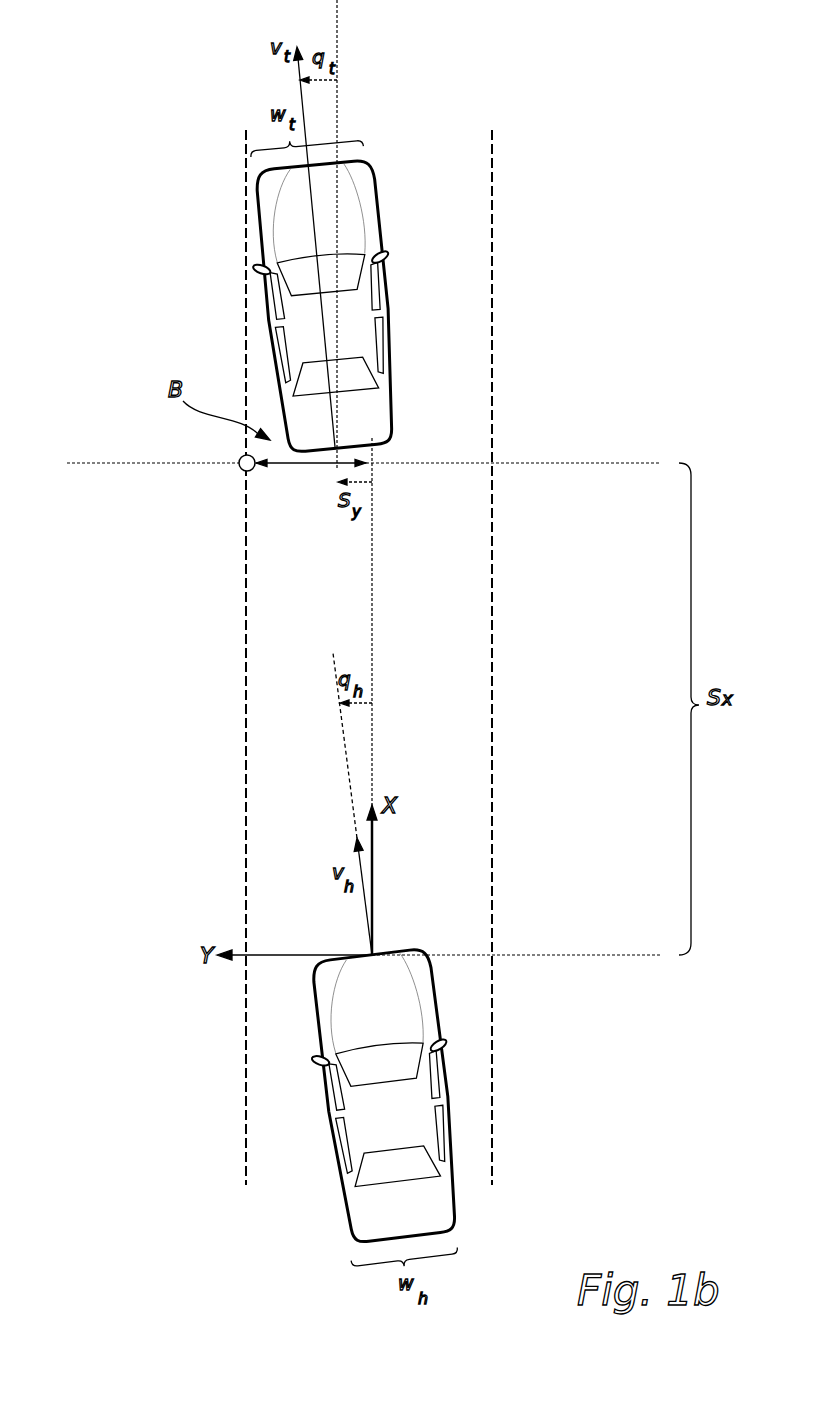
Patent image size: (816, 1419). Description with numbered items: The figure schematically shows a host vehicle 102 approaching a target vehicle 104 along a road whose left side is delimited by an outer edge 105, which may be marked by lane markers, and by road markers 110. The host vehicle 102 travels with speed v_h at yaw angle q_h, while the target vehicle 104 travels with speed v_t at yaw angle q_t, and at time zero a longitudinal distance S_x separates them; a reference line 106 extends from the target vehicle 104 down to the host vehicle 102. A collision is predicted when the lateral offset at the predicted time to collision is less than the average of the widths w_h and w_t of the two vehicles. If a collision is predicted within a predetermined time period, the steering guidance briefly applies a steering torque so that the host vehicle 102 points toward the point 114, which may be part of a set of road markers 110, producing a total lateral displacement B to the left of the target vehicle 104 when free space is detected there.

The host vehicle 102 is at (472, 1102).
The target vehicle 104 is at (390, 209).
The outer edge 105 is at (245, 302).
The road markers 110 is at (245, 302).
The longitudinal reference line 106 is at (372, 614).
The point 114 is at (243, 472).